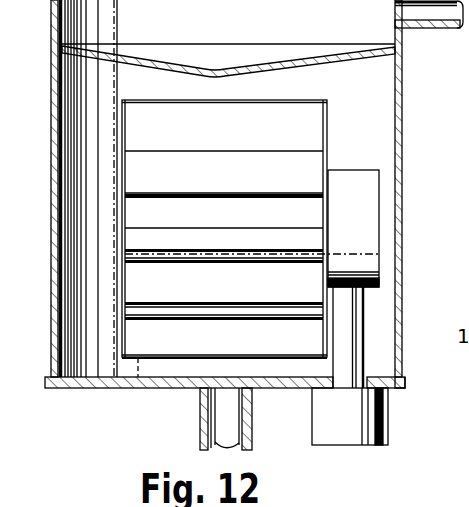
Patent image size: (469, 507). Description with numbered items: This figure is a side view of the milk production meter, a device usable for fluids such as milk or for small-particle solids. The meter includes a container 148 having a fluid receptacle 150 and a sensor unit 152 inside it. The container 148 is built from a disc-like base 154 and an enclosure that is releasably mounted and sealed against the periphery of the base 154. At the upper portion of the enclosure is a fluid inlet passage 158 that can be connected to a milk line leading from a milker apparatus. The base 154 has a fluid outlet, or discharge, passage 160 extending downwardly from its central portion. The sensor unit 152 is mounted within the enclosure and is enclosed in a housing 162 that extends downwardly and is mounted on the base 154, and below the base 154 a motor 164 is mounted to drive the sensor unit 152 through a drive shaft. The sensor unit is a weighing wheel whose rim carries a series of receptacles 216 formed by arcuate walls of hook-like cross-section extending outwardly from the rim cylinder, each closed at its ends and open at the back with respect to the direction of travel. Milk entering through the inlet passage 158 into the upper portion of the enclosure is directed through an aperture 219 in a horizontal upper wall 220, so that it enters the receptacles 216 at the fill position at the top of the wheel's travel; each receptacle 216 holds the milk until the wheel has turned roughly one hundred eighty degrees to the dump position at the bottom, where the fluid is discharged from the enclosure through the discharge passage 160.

The container 148 is at (401, 303).
The fluid receptacle 150 is at (307, 217).
The sensor unit 152 is at (365, 187).
The base 154 is at (127, 387).
The fluid inlet passage 158 is at (437, 24).
The fluid outlet passage 160 is at (197, 417).
The housing 162 is at (355, 305).
The motor 164 is at (354, 423).
The receptacles 216 is at (308, 135).
The aperture 219 is at (238, 63).
The horizontal upper wall 220 is at (311, 62).